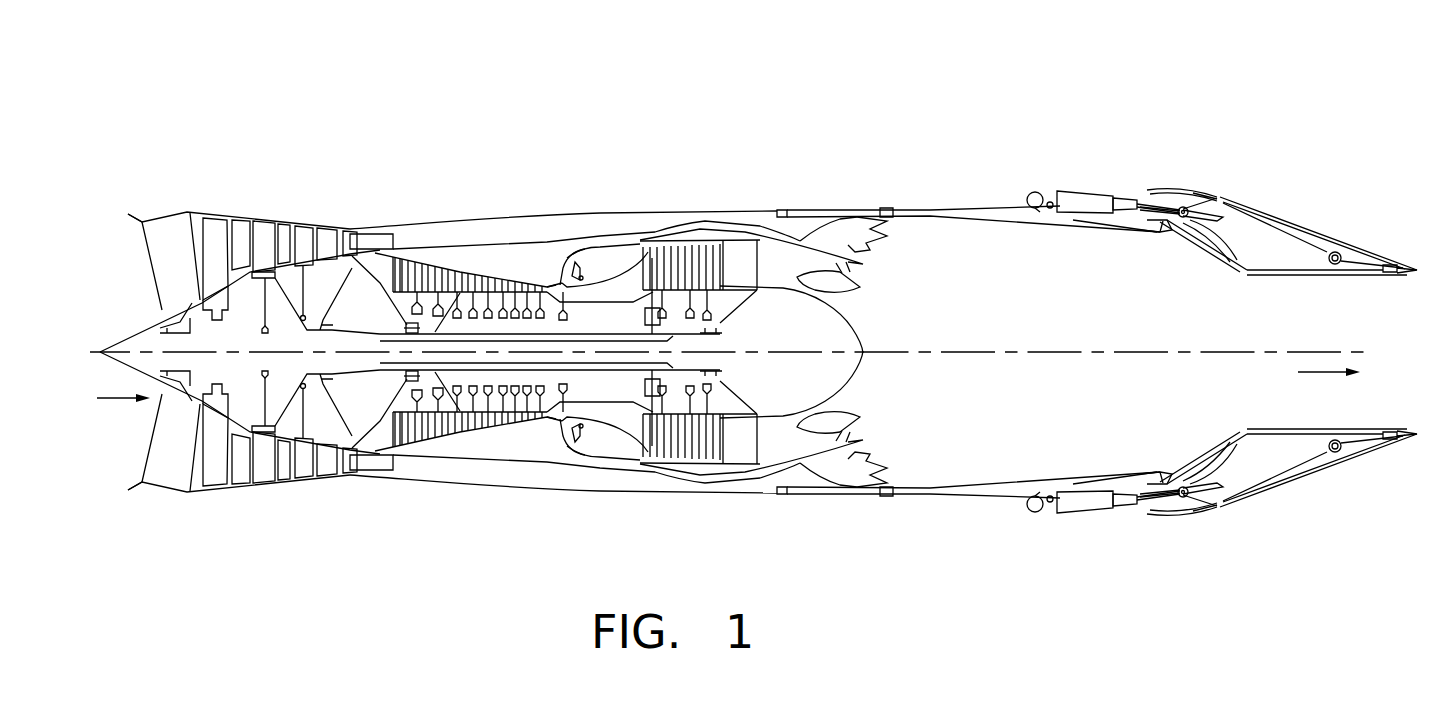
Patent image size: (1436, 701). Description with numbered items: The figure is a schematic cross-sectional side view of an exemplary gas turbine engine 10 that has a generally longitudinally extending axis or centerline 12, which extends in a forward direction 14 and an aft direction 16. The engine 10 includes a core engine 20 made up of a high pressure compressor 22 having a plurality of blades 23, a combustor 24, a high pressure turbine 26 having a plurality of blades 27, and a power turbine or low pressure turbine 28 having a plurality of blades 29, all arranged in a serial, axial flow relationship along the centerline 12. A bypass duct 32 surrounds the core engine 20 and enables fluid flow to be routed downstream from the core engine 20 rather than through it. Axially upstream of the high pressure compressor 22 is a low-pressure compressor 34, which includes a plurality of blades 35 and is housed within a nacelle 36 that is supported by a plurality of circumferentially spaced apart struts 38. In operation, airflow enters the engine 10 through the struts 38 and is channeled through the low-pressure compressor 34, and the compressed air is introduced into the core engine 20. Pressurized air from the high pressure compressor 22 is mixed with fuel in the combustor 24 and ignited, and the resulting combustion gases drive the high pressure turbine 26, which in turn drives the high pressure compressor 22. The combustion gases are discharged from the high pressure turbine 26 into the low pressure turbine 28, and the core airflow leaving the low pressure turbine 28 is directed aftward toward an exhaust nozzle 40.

The gas turbine engine 10 is at (213, 127).
The axis or centerline 12 is at (1360, 352).
The forward direction 14 is at (103, 400).
The aft direction 16 is at (1313, 373).
The core engine 20 is at (458, 514).
The high pressure compressor 22 is at (467, 280).
The blades 23 is at (462, 248).
The combustor 24 is at (600, 258).
The high pressure turbine 26 is at (667, 200).
The blades 27 is at (653, 240).
The low pressure turbine 28 is at (755, 198).
The blades 29 is at (680, 240).
The bypass duct 32 is at (683, 490).
The low-pressure compressor 34 is at (259, 507).
The blades 35 is at (299, 232).
The nacelle 36 is at (236, 218).
The struts 38 is at (167, 497).
The exhaust nozzle 40 is at (1347, 477).